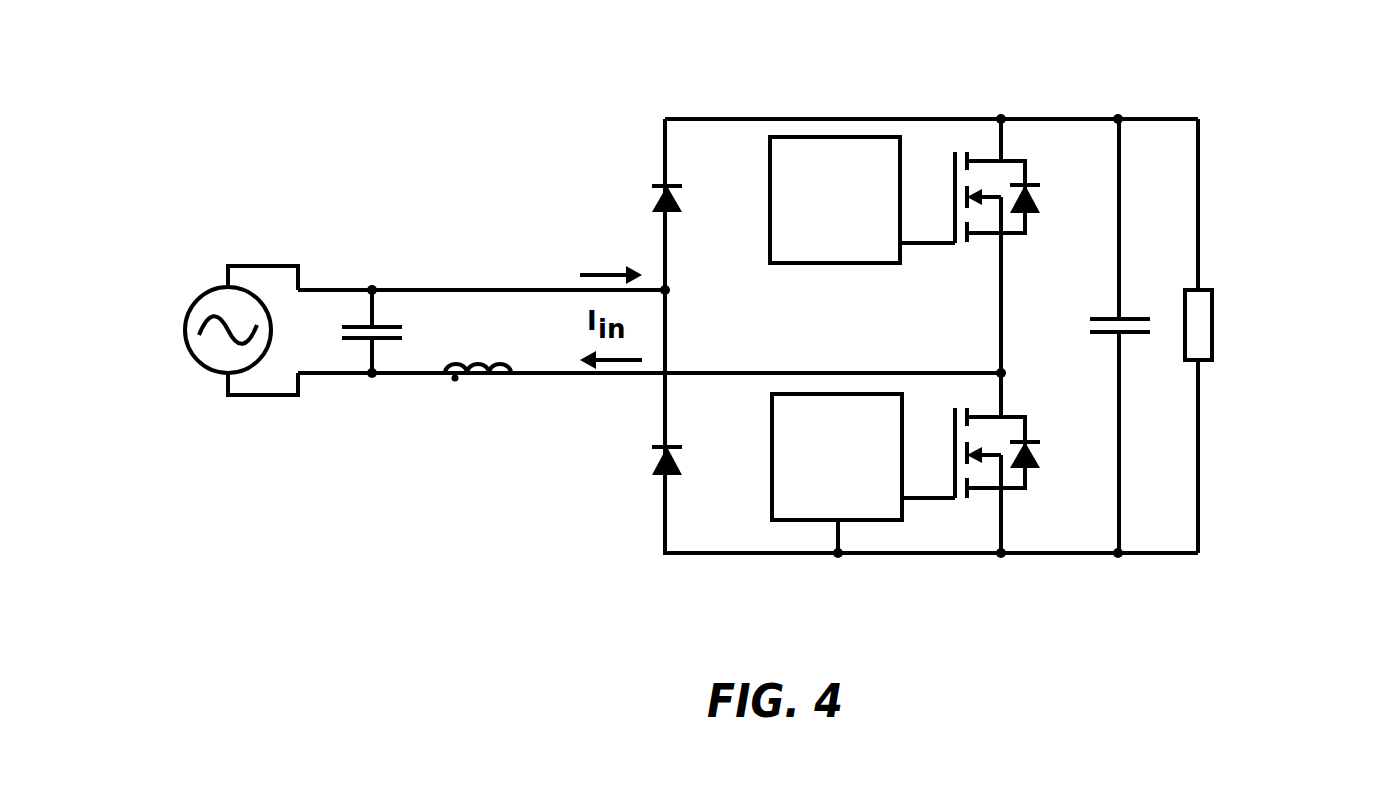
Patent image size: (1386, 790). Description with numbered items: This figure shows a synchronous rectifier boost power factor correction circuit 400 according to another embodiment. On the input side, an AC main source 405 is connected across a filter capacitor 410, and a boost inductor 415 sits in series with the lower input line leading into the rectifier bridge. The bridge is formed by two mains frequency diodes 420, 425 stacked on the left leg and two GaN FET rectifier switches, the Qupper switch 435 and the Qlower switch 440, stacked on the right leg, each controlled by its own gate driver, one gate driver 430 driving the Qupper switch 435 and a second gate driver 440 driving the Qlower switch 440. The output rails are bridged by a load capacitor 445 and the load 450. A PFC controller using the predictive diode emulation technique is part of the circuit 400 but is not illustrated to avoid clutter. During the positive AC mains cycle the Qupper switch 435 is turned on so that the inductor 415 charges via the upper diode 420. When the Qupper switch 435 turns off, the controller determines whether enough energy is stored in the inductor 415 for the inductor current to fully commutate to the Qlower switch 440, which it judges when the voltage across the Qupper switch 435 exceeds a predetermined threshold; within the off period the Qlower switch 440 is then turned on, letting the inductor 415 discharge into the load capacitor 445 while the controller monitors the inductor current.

The synchronous rectifier boost power factor correction circuit 400 is at (1155, 77).
The AC main source 405 is at (185, 333).
The filter capacitor 410 is at (362, 324).
The boost inductor 415 is at (490, 360).
The upper mains frequency diode 420 is at (652, 208).
The lower mains frequency diode 425 is at (652, 470).
The gate driver 430 is at (862, 200).
The Qupper switch 435 is at (1025, 160).
The Qlower switch and gate driver 440 is at (1055, 400).
The load capacitor 445 is at (1140, 318).
The load 450 is at (1210, 288).